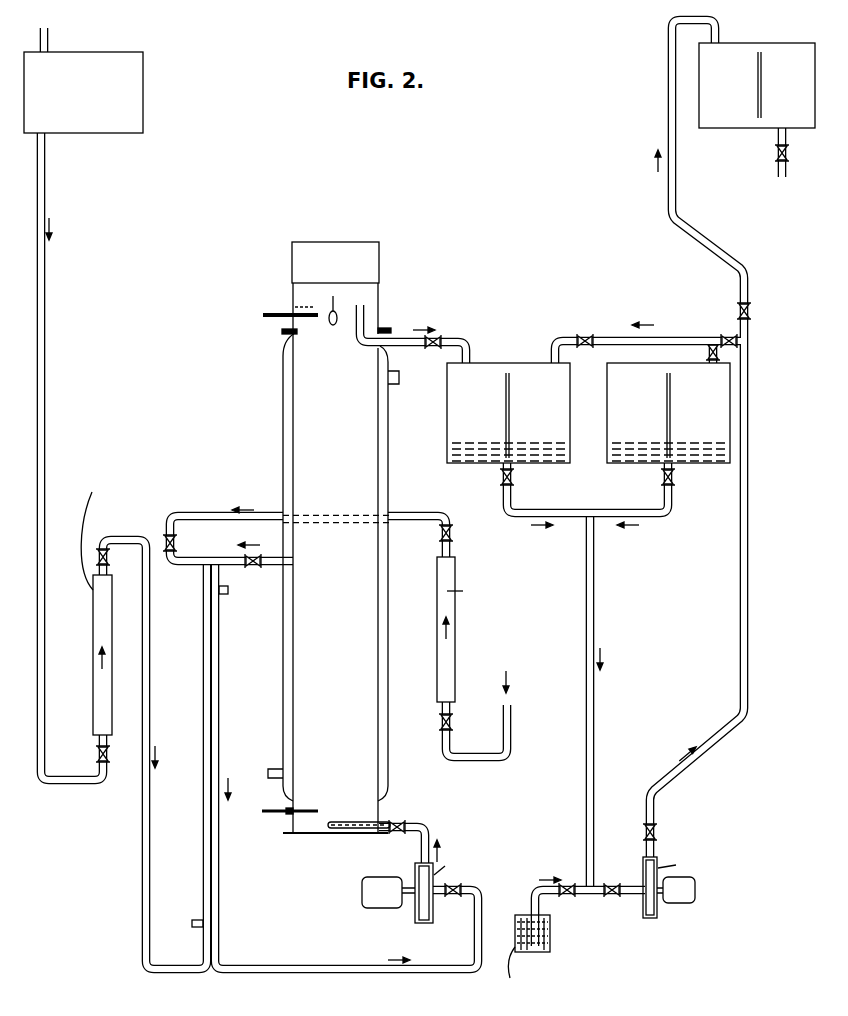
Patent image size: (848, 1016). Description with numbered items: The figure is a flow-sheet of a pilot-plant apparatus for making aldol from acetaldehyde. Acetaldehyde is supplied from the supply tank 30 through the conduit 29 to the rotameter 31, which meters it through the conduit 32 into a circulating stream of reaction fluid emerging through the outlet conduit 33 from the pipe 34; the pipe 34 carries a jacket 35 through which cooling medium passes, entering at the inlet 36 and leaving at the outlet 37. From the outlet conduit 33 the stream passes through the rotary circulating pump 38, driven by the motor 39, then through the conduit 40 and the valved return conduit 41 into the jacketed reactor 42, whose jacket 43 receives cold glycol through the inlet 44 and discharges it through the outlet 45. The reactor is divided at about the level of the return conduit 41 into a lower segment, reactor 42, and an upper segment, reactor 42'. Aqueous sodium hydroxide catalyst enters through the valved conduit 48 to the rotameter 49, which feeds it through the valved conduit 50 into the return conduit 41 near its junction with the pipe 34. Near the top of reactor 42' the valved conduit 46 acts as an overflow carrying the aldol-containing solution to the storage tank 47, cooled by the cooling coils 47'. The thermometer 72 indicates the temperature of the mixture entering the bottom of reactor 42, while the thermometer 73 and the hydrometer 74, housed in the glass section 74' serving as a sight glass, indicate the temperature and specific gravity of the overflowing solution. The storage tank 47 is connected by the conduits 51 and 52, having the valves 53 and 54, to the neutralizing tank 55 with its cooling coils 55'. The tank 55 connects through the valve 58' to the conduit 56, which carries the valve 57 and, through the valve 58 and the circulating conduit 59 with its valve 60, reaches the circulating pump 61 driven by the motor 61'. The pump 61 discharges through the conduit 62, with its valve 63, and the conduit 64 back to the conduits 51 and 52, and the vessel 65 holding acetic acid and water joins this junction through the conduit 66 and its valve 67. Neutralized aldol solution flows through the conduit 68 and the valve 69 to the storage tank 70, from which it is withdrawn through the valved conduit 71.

The conduit 29 is at (44, 183).
The supply tank 30 is at (140, 100).
The rotameter 31 is at (93, 615).
The conduit 32 is at (142, 864).
The outlet conduit 33 is at (212, 956).
The pipe 34 is at (218, 863).
The jacket 35 is at (224, 692).
The inlet 36 is at (198, 920).
The outlet 37 is at (240, 586).
The rotary circulating pump 38 is at (433, 915).
The motor 39 is at (370, 908).
The conduit 40 is at (406, 822).
The valved return conduit 41 is at (273, 568).
The jacketed reactor 42 is at (353, 537).
The reactor segment 42' is at (270, 558).
The jacket 43 is at (390, 457).
The inlet 44 is at (270, 769).
The outlet 45 is at (405, 362).
The valved conduit 46 is at (451, 340).
The storage tank 47 is at (490, 413).
The cooling coils 47' is at (486, 459).
The valved conduit 48 is at (509, 727).
The rotameter 49 is at (455, 636).
The valved conduit 50 is at (408, 522).
The conduit 51 is at (507, 503).
The conduit 52 is at (640, 512).
The valve 53 is at (514, 479).
The valve 54 is at (676, 479).
The neutralizing tank 55 is at (656, 413).
The cooling coils 55' is at (656, 463).
The conduit 56 is at (674, 337).
The valve 57 is at (585, 335).
The valve 58 is at (721, 326).
The valve 58' is at (697, 352).
The circulating conduit 59 is at (748, 548).
The valve 60 is at (657, 832).
The circulating pump 61 is at (681, 897).
The motor 61' is at (701, 890).
The conduit 62 is at (635, 896).
The valve 63 is at (611, 885).
The conduit 64 is at (594, 718).
The vessel 65 is at (550, 933).
The conduit 66 is at (535, 888).
The valve 67 is at (567, 885).
The conduit 68 is at (718, 249).
The valve 69 is at (752, 311).
The storage tank 70 is at (733, 43).
The valved conduit 71 is at (777, 148).
The thermometer 72 is at (286, 813).
The thermometer 73 is at (277, 312).
The hydrometer 74 is at (370, 303).
The glass section 74' is at (396, 321).